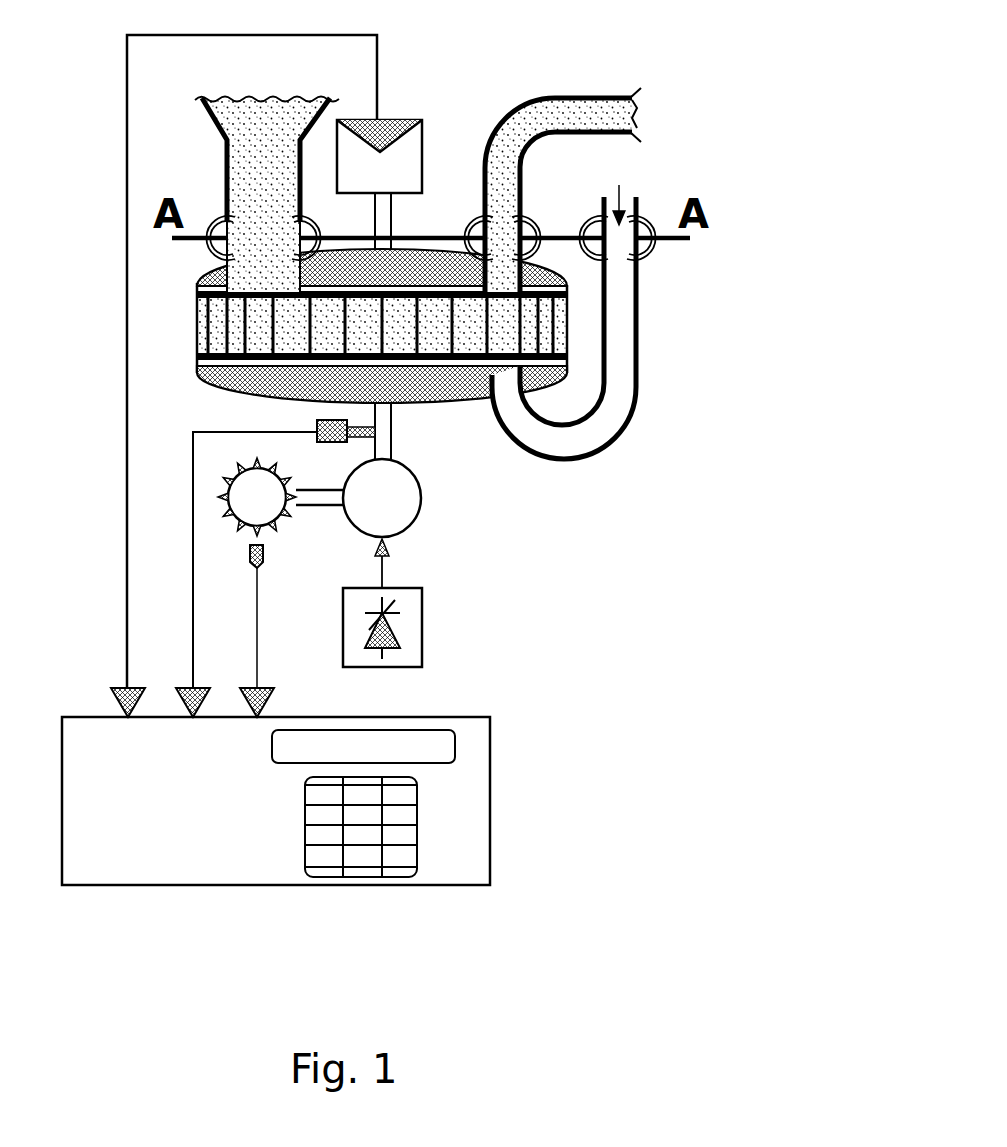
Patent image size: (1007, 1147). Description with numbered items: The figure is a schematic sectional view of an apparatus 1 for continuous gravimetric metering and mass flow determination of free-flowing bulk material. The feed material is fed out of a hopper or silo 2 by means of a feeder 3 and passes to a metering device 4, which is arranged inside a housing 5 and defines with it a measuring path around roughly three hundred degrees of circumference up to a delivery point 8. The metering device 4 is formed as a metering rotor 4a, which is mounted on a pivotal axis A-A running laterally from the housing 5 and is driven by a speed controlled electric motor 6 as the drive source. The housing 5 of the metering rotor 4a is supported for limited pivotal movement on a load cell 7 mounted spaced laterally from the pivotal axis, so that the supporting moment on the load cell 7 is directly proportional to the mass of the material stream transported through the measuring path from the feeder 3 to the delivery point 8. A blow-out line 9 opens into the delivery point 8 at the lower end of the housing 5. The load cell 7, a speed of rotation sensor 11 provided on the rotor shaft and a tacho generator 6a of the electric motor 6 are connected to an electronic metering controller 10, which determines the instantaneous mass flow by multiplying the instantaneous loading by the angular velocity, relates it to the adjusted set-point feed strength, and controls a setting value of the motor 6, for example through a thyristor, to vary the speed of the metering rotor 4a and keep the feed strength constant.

The apparatus 1 is at (436, 176).
The hopper or silo 2 is at (200, 117).
The feeder 3 is at (222, 216).
The metering device 4 is at (197, 373).
The metering rotor 4a is at (240, 334).
The housing 5 is at (445, 398).
The electric motor 6 is at (405, 513).
The tacho generator 6a is at (268, 512).
The load cell 7 is at (430, 123).
The delivery point 8 is at (498, 283).
The blow-out line 9 is at (625, 377).
The electronic metering controller 10 is at (490, 717).
The speed of rotation sensor 11 is at (334, 417).